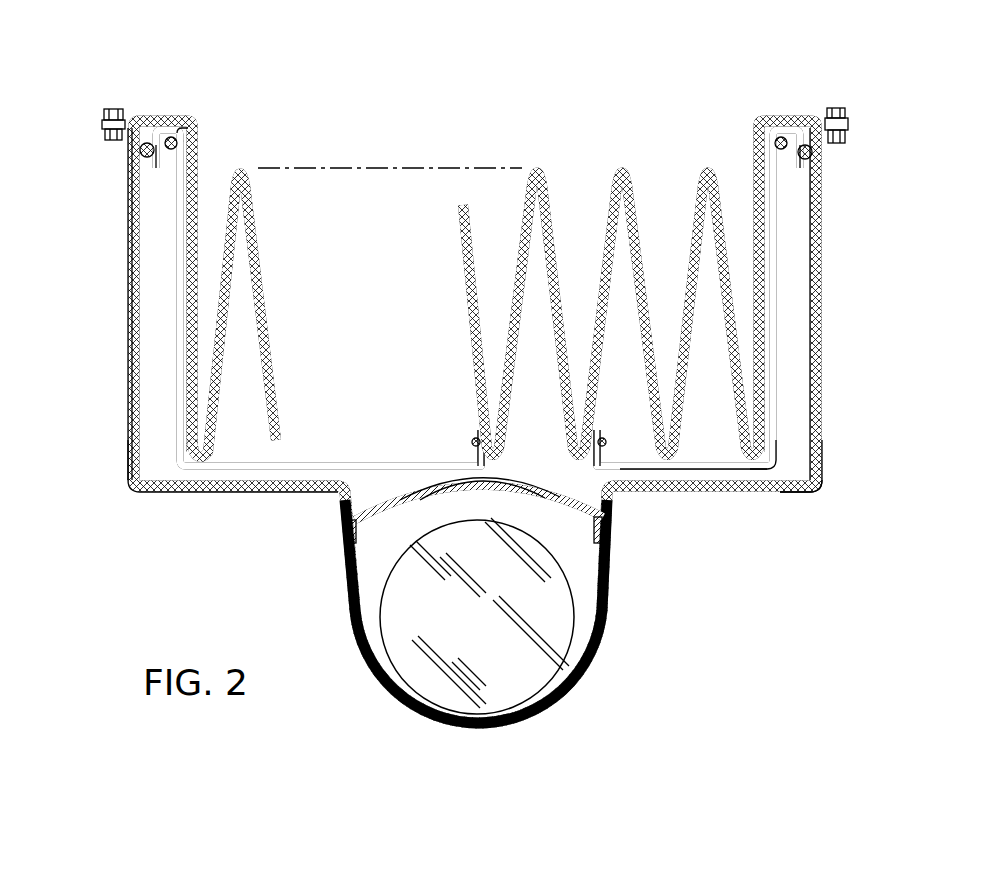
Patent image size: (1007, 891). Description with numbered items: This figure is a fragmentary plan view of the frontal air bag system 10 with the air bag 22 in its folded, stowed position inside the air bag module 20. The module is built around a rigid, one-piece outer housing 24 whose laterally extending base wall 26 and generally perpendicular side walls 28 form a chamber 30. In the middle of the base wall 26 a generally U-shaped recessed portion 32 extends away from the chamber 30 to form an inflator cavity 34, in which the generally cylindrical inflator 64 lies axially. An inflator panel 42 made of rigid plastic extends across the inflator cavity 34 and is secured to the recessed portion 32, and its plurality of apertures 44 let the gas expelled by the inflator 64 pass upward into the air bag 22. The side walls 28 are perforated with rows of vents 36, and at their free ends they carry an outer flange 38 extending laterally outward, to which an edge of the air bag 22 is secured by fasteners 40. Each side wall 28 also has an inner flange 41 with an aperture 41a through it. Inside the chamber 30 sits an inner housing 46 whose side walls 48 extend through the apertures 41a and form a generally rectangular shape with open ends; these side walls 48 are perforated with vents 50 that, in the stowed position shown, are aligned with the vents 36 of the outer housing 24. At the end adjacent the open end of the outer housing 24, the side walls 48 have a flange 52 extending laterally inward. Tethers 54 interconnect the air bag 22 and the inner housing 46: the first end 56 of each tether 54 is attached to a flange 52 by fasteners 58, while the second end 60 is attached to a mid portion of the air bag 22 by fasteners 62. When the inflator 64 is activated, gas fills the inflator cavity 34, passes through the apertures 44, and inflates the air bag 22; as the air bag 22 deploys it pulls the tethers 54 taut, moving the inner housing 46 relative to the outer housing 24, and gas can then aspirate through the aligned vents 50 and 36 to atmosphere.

The frontal air bag system 10 is at (632, 122).
The air bag module 20 is at (823, 258).
The air bag 22 is at (552, 212).
The outer housing 24 is at (705, 490).
The base wall 26 is at (222, 492).
The side walls 28 is at (130, 455).
The chamber 30 is at (812, 482).
The recessed portion 32 is at (562, 700).
The inflator cavity 34 is at (581, 612).
The vents 36 is at (130, 380).
The outer flange 38 is at (104, 124).
The fasteners 40 is at (112, 108).
The inner flange 41 is at (175, 138).
The aperture 41a is at (190, 137).
The inflator panel 42 is at (618, 625).
The apertures 44 is at (542, 497).
The inner housing 46 is at (806, 462).
The side walls 48 is at (130, 402).
The vents 50 is at (130, 282).
The flange 52 is at (163, 140).
The tethers 54 is at (190, 160).
The first end 56 is at (158, 165).
The fasteners 58 is at (145, 155).
The second end 60 is at (478, 432).
The fasteners 62 is at (470, 440).
The inflator 64 is at (402, 660).